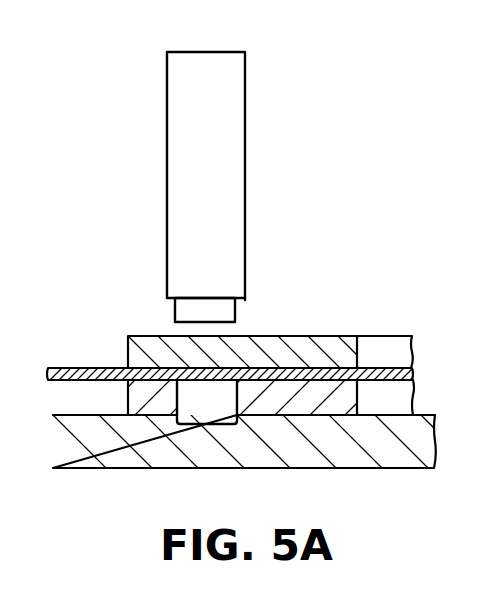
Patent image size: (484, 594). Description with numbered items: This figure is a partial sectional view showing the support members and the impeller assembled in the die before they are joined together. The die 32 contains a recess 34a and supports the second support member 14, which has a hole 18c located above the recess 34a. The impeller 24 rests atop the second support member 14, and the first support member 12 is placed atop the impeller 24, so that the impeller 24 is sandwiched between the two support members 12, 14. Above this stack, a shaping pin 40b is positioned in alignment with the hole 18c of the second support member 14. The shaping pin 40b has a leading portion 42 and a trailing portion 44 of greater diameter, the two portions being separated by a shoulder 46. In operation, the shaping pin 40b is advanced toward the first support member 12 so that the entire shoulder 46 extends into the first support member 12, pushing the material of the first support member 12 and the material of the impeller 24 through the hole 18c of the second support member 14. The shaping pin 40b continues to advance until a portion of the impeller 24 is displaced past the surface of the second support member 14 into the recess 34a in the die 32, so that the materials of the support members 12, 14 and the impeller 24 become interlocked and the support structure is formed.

The shaping pin 40b is at (199, 168).
The trailing portion 44 is at (172, 196).
The leading portion 42 is at (180, 310).
The shoulder 46 is at (245, 300).
The first support member 12 is at (308, 350).
The impeller 24 is at (53, 368).
The second support member 14 is at (150, 406).
The hole 18c is at (187, 394).
The die 32 is at (357, 457).
The recess 34a is at (208, 421).